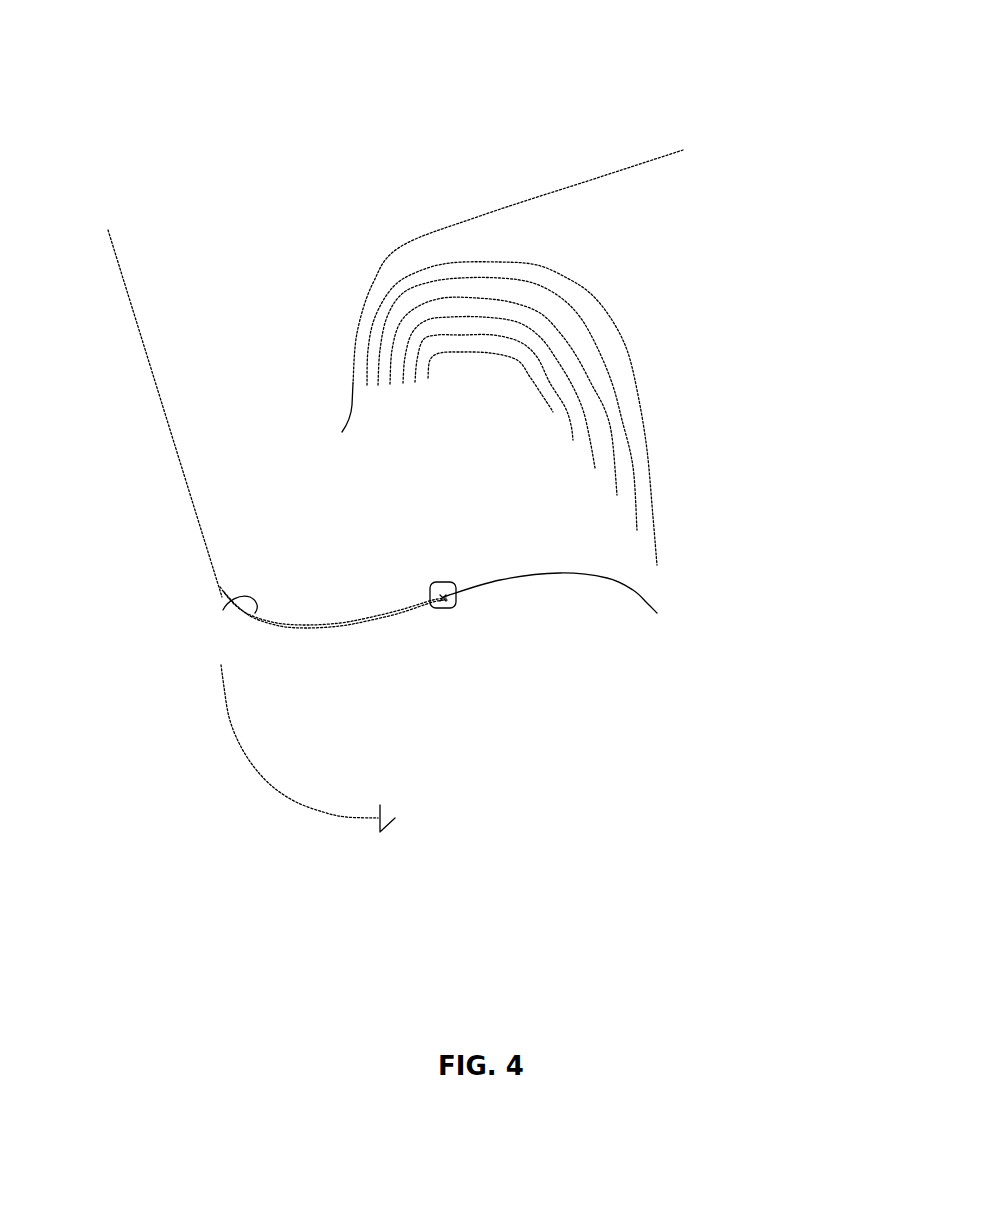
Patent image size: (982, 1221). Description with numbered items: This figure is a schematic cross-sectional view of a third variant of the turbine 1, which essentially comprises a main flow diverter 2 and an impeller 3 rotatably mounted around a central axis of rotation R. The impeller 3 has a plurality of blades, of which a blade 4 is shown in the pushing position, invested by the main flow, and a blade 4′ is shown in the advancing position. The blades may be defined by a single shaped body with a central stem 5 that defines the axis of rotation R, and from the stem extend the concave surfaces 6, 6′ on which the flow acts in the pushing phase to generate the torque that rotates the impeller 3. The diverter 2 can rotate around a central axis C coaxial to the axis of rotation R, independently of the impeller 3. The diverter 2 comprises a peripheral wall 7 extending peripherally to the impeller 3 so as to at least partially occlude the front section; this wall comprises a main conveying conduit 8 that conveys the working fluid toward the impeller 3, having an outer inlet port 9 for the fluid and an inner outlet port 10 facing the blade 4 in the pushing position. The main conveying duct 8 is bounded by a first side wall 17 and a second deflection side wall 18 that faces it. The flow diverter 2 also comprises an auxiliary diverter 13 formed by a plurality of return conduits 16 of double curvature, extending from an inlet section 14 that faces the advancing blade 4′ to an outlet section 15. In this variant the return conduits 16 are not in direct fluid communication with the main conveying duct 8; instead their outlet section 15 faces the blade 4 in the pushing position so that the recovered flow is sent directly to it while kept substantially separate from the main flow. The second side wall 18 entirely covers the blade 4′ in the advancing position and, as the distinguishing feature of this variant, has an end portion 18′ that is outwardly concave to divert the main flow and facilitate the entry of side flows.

The turbine 1 is at (782, 98).
The main flow diverter 2 is at (513, 148).
The impeller 3 is at (640, 638).
The blade 4 is at (307, 627).
The blade 4′ is at (655, 603).
The central stem 5 is at (455, 602).
The concave surface 6 is at (223, 610).
The concave surface 6′ is at (630, 588).
The peripheral wall 7 is at (643, 205).
The main conveying conduit 8 is at (242, 426).
The outer inlet port 9 is at (160, 210).
The inner outlet port 10 is at (287, 487).
The auxiliary diverter 13 is at (640, 410).
The inlet section 14 is at (608, 503).
The outlet section 15 is at (408, 385).
The return conduits 16 is at (580, 360).
The first side wall 17 is at (137, 320).
The second deflection side wall 18 is at (610, 176).
The end portion 18′ is at (352, 405).
The axis of rotation R is at (442, 598).
The central axis C is at (442, 605).